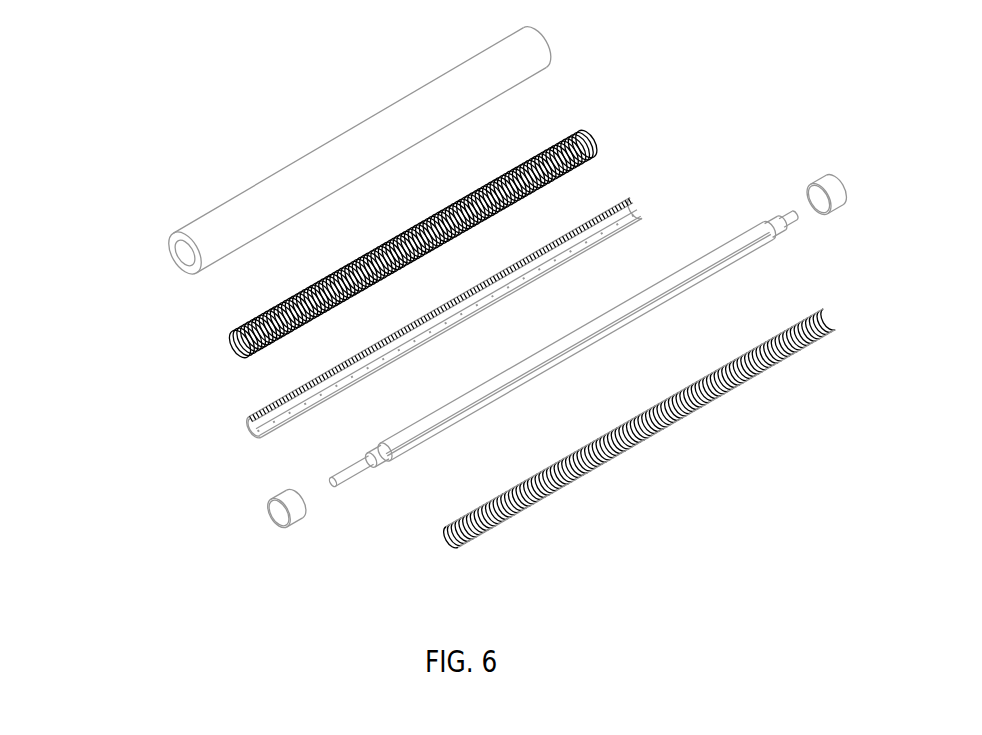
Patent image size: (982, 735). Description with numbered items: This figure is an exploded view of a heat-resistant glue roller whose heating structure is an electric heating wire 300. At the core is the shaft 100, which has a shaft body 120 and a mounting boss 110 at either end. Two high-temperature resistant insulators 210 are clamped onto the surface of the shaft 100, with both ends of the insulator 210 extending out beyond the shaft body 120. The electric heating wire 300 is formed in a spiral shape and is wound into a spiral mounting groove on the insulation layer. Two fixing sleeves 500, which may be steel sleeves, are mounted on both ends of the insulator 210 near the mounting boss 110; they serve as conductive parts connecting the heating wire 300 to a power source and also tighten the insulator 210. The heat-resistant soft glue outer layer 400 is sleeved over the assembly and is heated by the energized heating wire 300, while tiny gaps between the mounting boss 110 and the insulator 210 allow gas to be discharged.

The heat-resistant soft glue outer layer 400 is at (304, 153).
The electric heating wire 300 is at (330, 244).
The high-temperature resistant insulator 210 is at (446, 406).
The shaft 100 is at (460, 318).
The shaft body 120 is at (578, 302).
The mounting boss 110 is at (814, 249).
The fixing sleeve 500 is at (181, 489).